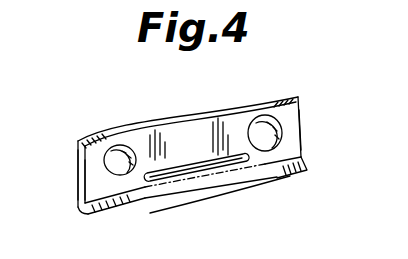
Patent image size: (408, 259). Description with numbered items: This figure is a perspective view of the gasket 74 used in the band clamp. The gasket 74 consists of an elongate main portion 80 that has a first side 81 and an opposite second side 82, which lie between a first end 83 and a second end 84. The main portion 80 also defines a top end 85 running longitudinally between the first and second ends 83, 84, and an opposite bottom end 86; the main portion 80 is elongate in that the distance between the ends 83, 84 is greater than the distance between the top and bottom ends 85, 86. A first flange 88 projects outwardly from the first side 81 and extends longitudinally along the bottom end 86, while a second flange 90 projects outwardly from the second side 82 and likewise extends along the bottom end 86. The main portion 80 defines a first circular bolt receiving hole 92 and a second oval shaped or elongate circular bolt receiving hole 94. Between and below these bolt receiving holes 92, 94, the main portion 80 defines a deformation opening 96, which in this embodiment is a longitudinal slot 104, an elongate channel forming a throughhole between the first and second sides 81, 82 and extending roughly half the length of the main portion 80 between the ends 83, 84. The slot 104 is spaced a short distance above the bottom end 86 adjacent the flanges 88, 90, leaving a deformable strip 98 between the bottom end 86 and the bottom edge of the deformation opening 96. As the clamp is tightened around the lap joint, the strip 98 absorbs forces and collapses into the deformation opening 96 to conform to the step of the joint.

The gasket 74 is at (127, 117).
The main portion 80 is at (181, 142).
The first side 81 is at (92, 156).
The second side 82 is at (78, 164).
The first end 83 is at (85, 183).
The second end 84 is at (301, 135).
The top end 85 is at (243, 110).
The bottom end 86 is at (197, 193).
The first flange 88 is at (123, 206).
The second flange 90 is at (82, 208).
The first circular bolt receiving hole 92 is at (126, 151).
The second bolt receiving hole 94 is at (283, 128).
The deformation opening 96 is at (285, 173).
The deformable strip 98 is at (248, 186).
The longitudinal slot 104 is at (143, 180).